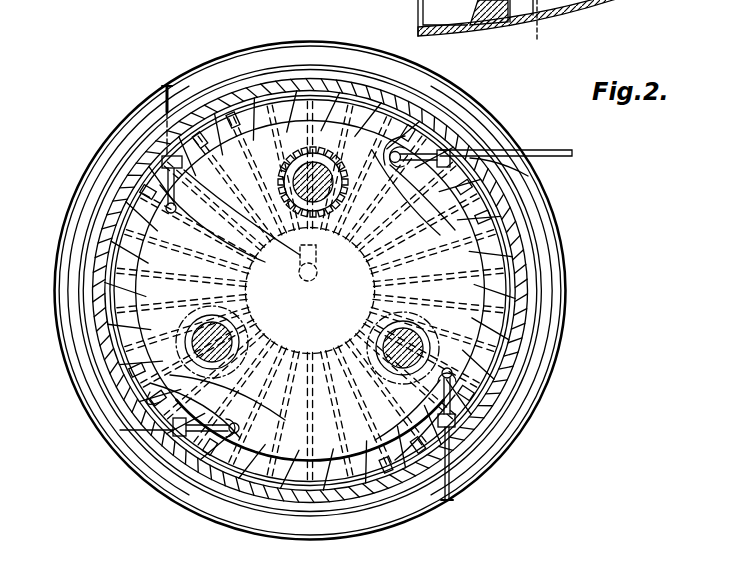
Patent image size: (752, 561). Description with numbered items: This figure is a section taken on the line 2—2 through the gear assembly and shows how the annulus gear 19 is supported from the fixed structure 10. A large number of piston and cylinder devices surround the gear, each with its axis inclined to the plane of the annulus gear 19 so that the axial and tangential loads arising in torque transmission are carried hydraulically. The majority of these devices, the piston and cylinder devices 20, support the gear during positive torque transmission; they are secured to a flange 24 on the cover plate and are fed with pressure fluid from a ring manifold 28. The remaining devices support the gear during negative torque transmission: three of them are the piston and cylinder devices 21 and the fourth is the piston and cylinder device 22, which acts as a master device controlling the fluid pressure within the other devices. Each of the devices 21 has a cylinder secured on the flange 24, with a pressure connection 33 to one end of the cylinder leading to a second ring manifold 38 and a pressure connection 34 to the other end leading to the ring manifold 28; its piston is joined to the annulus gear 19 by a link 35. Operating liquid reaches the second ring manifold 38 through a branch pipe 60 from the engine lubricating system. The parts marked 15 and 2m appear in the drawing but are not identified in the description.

The section line 2 is at (516, 35).
The fixed structure 10 is at (272, 100).
The second ring manifold 38 is at (243, 46).
The flange 24 is at (313, 67).
The annulus gear 19 is at (486, 315).
The ring manifold 28 is at (330, 312).
The stud 2m is at (307, 277).
The shaft hub 15 is at (313, 214).
The piston and cylinder devices 20 is at (192, 132).
The pressure connection 33 is at (164, 86).
The piston and cylinder devices 21 is at (168, 158).
The link 35 is at (558, 424).
The piston and cylinder device 22 is at (455, 150).
The pressure connection 34 is at (528, 176).
The branch pipe 60 is at (572, 153).